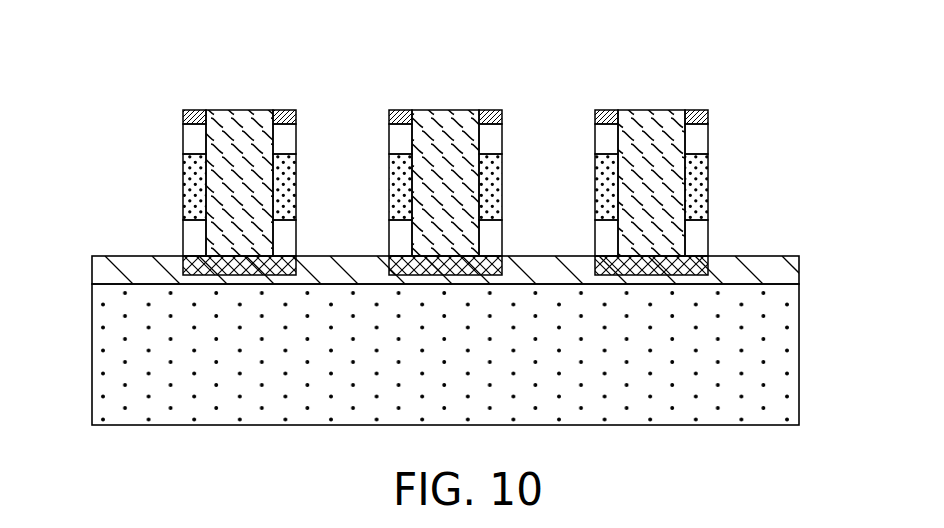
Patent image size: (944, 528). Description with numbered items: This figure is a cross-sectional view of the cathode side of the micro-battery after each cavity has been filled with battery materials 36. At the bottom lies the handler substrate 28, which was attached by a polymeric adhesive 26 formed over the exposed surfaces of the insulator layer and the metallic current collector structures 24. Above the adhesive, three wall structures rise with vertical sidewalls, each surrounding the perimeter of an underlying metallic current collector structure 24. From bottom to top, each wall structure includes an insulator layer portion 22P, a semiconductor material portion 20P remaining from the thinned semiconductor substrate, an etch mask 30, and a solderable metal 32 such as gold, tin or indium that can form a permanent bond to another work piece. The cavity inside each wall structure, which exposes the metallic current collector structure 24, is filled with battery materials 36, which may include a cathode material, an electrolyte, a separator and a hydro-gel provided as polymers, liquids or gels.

The semiconductor material portion 20P is at (195, 190).
The insulator layer portion 22P is at (192, 240).
The metallic current collector structure 24 is at (230, 277).
The polymeric adhesive 26 is at (100, 266).
The handler substrate 28 is at (777, 347).
The etch mask 30 is at (190, 137).
The solderable metal 32 is at (193, 110).
The battery materials 36 is at (443, 110).